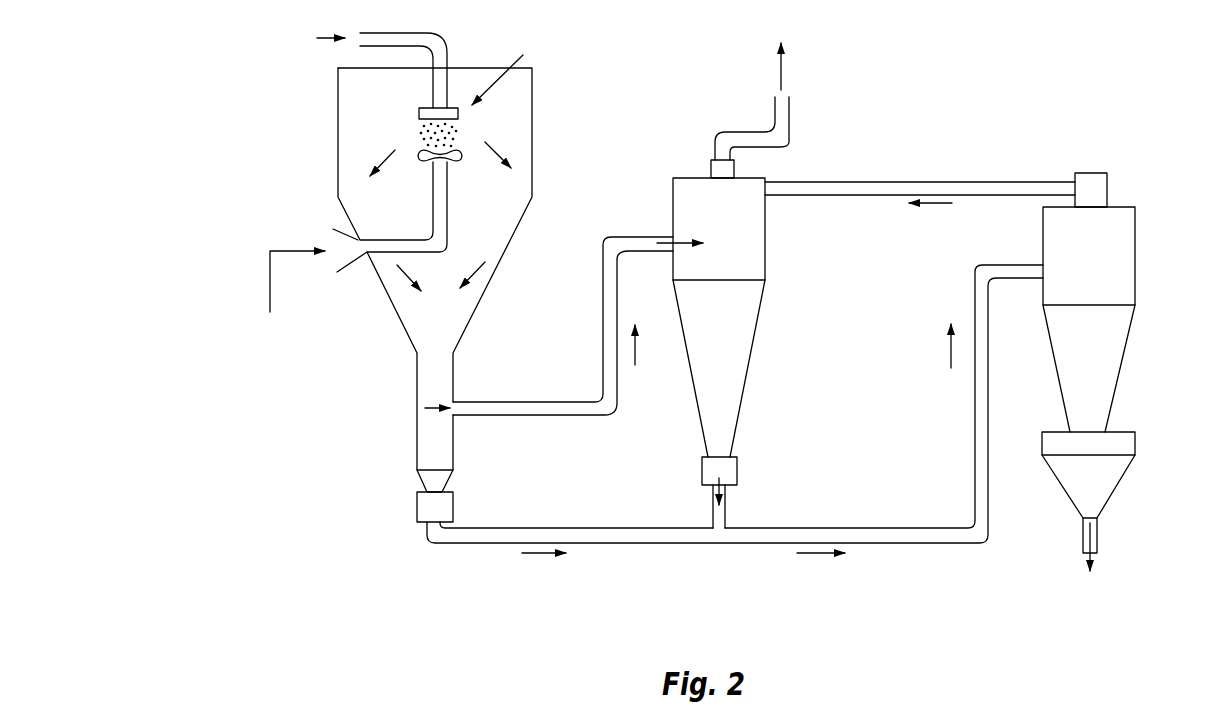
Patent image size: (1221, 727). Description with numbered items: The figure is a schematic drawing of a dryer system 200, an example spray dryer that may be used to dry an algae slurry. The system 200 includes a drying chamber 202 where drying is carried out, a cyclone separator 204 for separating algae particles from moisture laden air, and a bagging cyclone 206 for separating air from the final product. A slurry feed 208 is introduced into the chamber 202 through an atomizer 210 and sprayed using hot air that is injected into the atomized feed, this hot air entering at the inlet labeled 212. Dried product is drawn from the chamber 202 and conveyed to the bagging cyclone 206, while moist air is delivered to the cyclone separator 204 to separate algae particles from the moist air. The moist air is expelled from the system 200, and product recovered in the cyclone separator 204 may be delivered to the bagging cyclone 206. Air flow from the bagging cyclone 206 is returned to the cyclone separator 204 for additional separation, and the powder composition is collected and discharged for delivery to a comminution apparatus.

The dryer system 200 is at (250, 72).
The drying chamber 202 is at (353, 116).
The cyclone separator 204 is at (752, 230).
The bagging cyclone 206 is at (1135, 248).
The slurry feed 208 is at (400, 33).
The atomizer 210 is at (458, 115).
The hot air inlet 212 is at (262, 347).